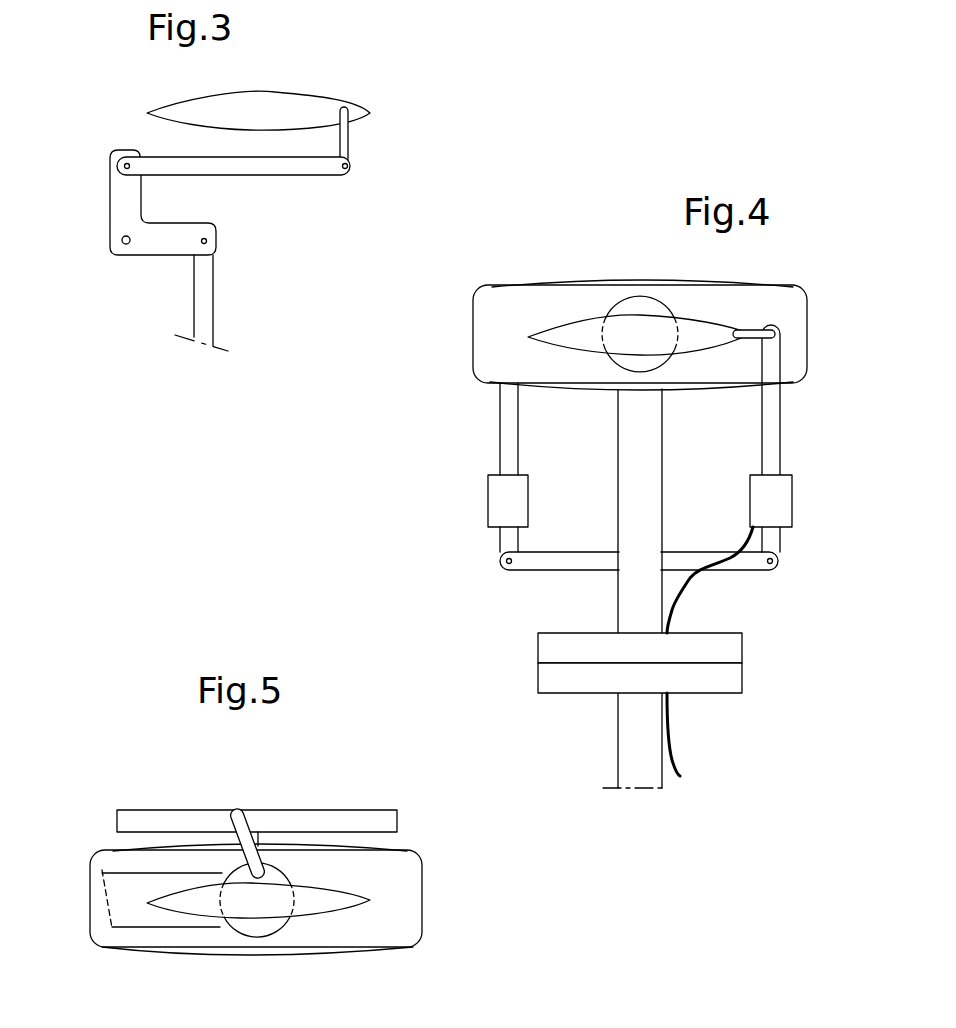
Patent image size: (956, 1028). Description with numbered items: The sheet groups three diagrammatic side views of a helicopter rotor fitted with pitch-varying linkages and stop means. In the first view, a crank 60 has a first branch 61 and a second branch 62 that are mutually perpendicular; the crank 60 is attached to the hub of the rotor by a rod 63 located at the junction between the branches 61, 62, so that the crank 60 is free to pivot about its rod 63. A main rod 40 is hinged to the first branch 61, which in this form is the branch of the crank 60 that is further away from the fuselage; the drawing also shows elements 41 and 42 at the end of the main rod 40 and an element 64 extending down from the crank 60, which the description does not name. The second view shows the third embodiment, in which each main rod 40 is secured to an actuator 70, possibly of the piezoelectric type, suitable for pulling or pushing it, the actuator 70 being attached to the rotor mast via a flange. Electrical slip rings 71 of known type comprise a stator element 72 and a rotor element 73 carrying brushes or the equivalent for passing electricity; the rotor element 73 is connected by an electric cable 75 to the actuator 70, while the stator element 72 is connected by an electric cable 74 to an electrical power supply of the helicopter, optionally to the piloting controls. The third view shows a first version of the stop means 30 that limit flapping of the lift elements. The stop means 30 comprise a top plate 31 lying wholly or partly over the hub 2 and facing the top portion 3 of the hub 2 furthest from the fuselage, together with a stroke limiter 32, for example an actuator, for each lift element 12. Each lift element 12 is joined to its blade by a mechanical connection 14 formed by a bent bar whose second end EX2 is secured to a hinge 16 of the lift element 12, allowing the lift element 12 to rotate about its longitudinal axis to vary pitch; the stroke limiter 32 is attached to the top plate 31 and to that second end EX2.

In FIG. 5, the hub 2 is at (93, 882).
In FIG. 5, the top portion 3 is at (110, 850).
In FIG. 5, the lift element 12 is at (360, 900).
In FIG. 5, the mechanical connection 14 is at (130, 918).
In FIG. 5, the hinge 16 is at (268, 935).
In FIG. 5, the stop means 30 is at (91, 808).
In FIG. 5, the top plate 31 is at (371, 809).
In FIG. 5, the stroke limiter 32 is at (263, 817).
In FIG. 5, the second end EX2 is at (218, 862).
In FIG. 3, the main rod 40 is at (318, 167).
In FIG. 4, the main rod 40 is at (781, 350).
In FIG. 3, the pivot 41 is at (346, 158).
In FIG. 3, the pin 42 is at (348, 133).
In FIG. 3, the crank 60 is at (148, 288).
In FIG. 3, the first branch 61 is at (117, 178).
In FIG. 3, the second branch 62 is at (211, 230).
In FIG. 3, the rod 63 is at (123, 241).
In FIG. 3, the shaft 64 is at (207, 303).
In FIG. 4, the actuator 70 is at (783, 512).
In FIG. 4, the electrical slip rings 71 is at (500, 646).
In FIG. 4, the stator element 72 is at (736, 680).
In FIG. 4, the rotor element 73 is at (736, 643).
In FIG. 4, the electric cable 74 is at (624, 720).
In FIG. 4, the electric cable 75 is at (688, 578).